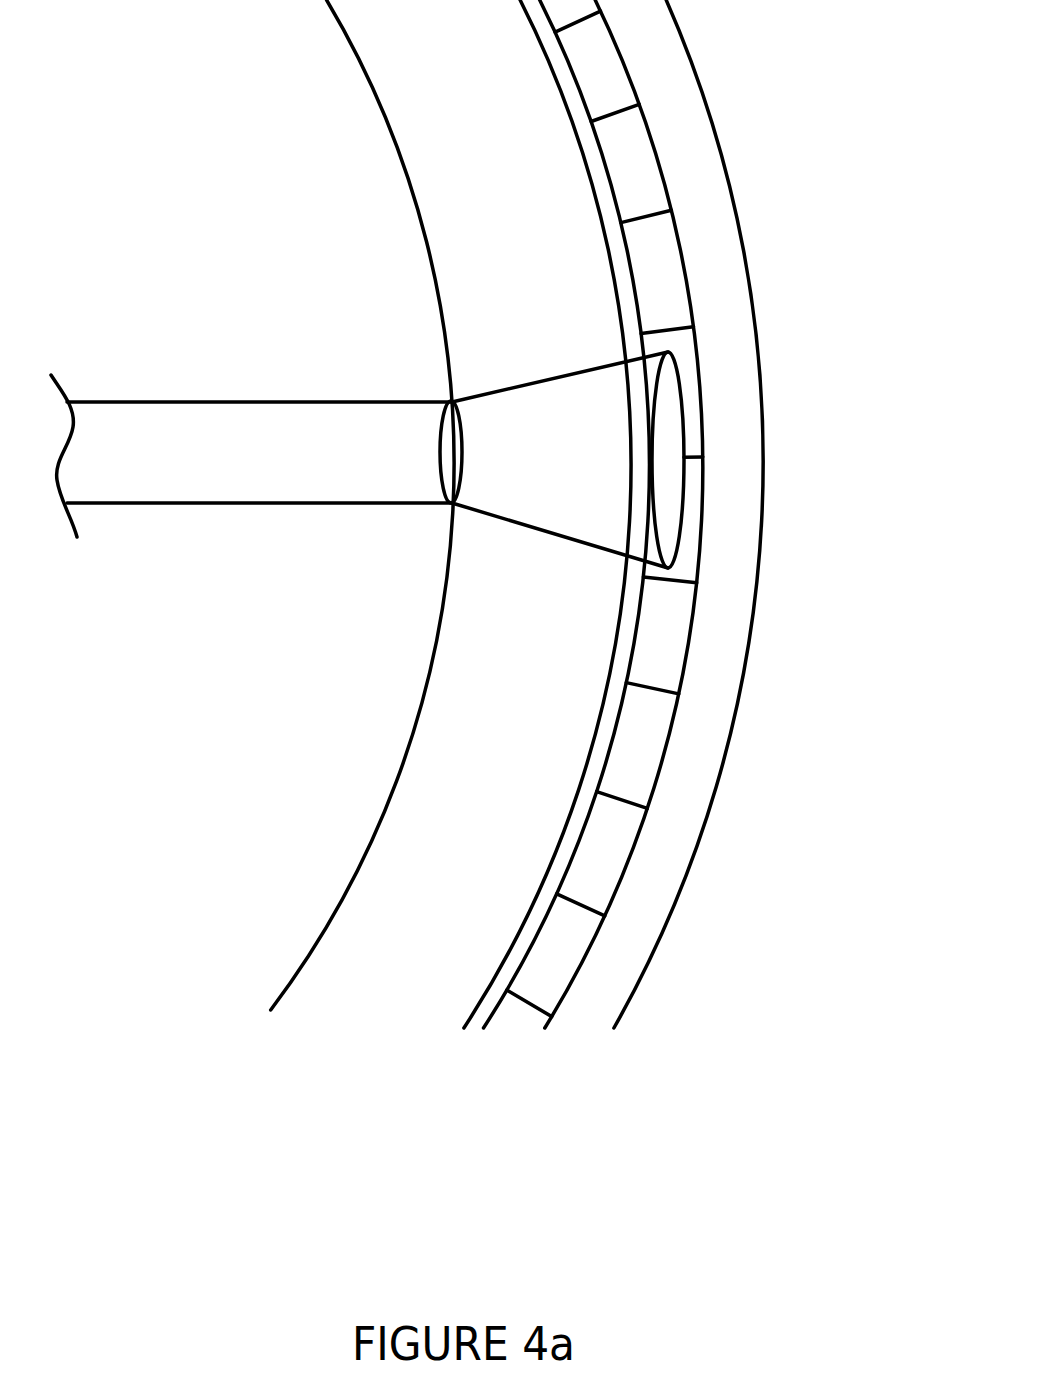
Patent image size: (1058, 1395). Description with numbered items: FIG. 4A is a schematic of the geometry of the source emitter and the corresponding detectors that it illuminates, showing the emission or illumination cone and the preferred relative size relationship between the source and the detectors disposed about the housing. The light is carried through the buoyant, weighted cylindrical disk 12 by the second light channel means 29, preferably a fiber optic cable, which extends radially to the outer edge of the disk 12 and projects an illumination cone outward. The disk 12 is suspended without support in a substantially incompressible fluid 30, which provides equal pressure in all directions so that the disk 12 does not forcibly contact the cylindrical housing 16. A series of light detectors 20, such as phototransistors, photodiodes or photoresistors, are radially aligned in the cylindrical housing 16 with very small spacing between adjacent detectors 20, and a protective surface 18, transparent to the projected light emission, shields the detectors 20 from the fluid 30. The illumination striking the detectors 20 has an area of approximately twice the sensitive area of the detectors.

The cylindrical disk 12 is at (300, 967).
The cylindrical housing 16 is at (705, 827).
The protective surface 18 is at (515, 945).
The light detectors 20 is at (657, 273).
The second light channel means 29 is at (247, 503).
The fluid 30 is at (557, 731).